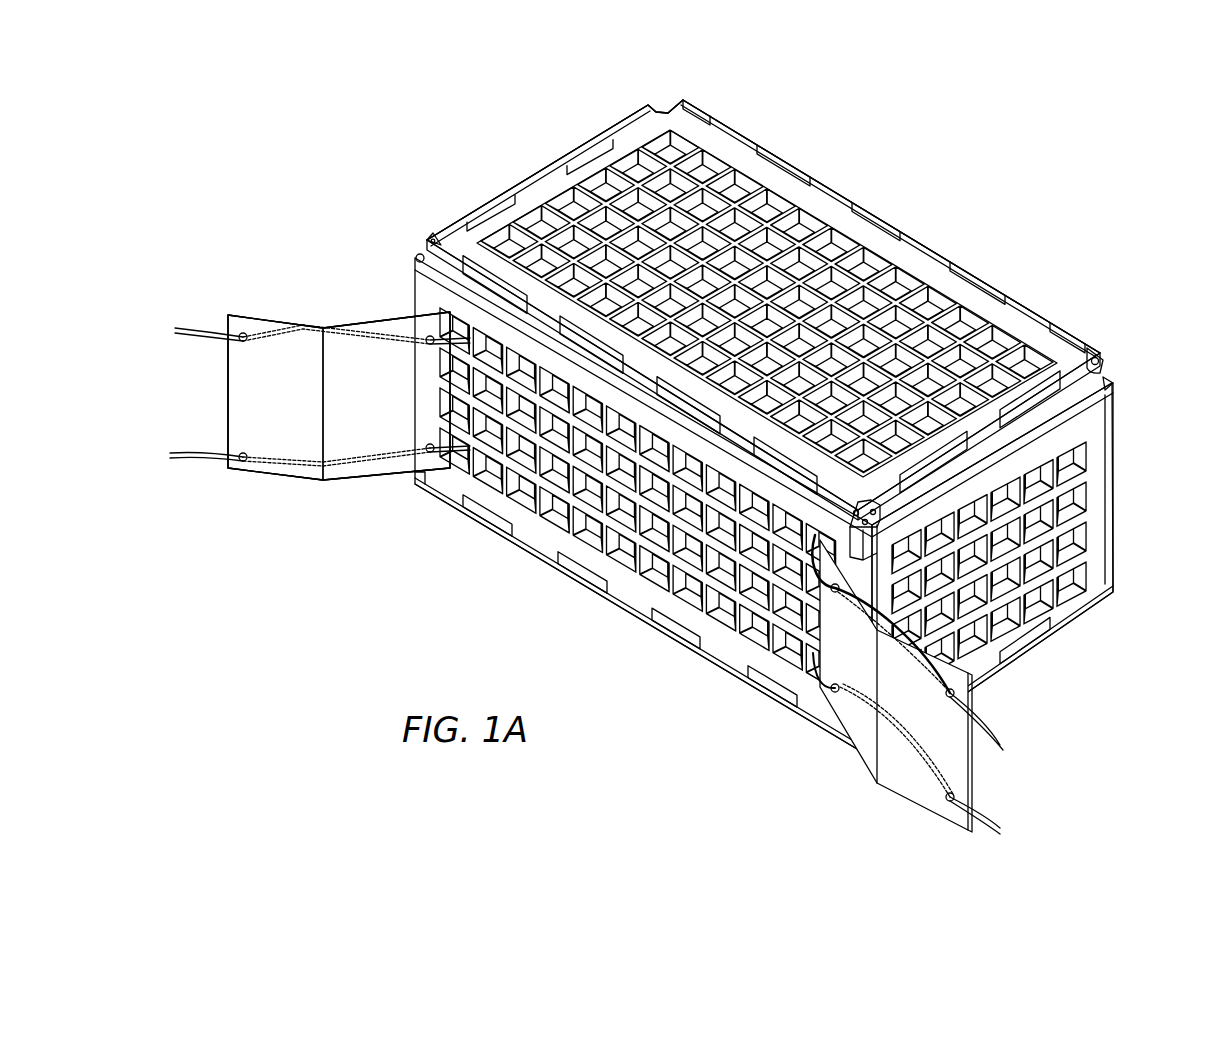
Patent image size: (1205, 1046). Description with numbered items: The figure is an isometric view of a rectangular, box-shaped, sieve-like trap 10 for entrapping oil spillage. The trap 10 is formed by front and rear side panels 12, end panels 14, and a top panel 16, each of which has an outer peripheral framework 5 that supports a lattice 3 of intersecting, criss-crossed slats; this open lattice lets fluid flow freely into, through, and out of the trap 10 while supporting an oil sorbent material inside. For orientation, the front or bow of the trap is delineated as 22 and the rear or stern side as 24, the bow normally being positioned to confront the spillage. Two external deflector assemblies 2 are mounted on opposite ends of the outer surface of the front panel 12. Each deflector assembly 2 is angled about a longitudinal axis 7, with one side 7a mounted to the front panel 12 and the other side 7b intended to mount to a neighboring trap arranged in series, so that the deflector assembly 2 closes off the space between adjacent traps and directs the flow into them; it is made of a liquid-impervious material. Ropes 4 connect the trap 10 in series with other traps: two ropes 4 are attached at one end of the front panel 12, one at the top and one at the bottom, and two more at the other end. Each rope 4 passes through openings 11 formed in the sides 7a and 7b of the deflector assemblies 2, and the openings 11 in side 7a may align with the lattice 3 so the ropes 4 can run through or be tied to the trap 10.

The external deflector assembly 2 is at (249, 407).
The lattice 3 is at (1012, 338).
The rope 4 is at (188, 328).
The outer peripheral framework 5 is at (1017, 313).
The longitudinal axis 7 is at (320, 473).
The side 7a is at (348, 347).
The side 7b is at (305, 343).
The trap 10 is at (977, 197).
The opening 11 is at (247, 346).
The front side panel 12 is at (723, 657).
The end panel 14 is at (1098, 428).
The top panel 16 is at (937, 273).
The bow 22 is at (528, 572).
The stern side 24 is at (848, 178).